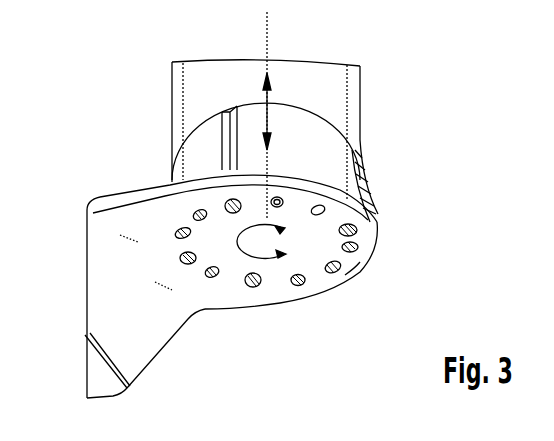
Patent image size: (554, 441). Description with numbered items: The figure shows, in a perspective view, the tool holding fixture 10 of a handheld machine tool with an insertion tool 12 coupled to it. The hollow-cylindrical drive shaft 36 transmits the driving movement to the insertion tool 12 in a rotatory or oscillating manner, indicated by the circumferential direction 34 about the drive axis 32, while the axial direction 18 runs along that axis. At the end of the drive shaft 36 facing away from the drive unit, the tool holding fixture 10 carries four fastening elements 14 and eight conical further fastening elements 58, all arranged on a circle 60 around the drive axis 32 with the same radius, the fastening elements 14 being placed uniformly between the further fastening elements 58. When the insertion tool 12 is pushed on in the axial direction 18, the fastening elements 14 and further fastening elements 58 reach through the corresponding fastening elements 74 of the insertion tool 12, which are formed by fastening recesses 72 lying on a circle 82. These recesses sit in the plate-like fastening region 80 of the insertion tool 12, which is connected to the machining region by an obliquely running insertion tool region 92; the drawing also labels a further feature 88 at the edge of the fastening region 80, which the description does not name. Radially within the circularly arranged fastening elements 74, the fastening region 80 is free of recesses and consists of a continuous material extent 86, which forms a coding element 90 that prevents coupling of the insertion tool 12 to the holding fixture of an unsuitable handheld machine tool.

The tool holding fixture 10 is at (378, 148).
The insertion tool 12 is at (161, 338).
The fastening element 14 is at (357, 232).
The axial direction 18 is at (279, 97).
The drive axis 32 is at (266, 34).
The circumferential direction 34 is at (271, 258).
The drive shaft 36 is at (352, 93).
The further fastening element 58 is at (347, 244).
The circle 60 is at (229, 276).
The fastening recess 72 is at (190, 217).
The fastening element 74 is at (191, 224).
The fastening region 80 is at (355, 271).
The circle 82 is at (212, 272).
The material extent 86 is at (334, 283).
The disc 88 is at (366, 253).
The coding element 90 is at (333, 267).
The insertion tool region 92 is at (88, 257).